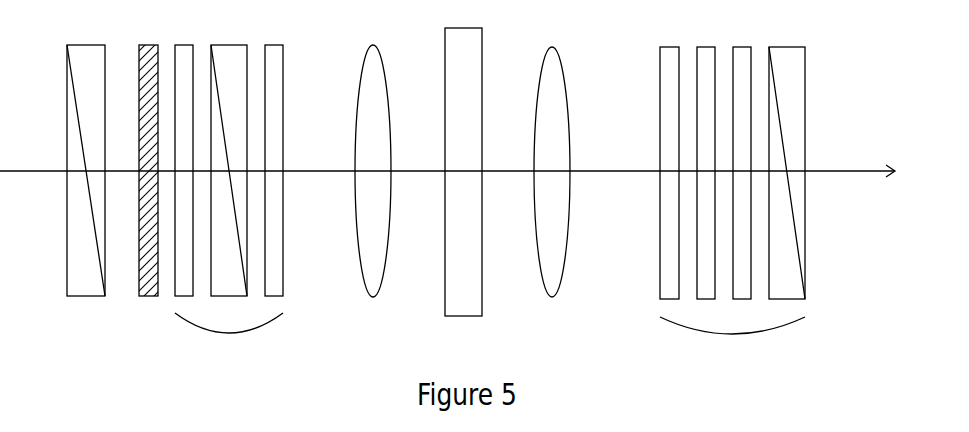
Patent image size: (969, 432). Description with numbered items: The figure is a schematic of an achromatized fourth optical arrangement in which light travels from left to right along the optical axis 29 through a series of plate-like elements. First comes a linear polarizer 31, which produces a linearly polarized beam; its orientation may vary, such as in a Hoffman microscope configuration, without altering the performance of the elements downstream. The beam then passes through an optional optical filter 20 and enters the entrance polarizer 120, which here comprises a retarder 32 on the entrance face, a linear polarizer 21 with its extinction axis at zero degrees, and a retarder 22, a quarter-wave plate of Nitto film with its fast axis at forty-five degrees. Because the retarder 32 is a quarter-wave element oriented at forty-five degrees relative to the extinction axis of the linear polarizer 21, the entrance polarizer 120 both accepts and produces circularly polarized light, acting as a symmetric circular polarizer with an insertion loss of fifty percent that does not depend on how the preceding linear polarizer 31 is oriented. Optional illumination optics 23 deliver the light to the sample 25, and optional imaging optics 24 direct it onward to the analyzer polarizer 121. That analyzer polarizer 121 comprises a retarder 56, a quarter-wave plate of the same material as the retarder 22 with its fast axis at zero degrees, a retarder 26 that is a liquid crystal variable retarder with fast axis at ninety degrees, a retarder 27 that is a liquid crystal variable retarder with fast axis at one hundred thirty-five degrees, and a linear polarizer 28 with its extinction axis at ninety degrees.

The optical axis 29 is at (447, 157).
The linear polarizer 31 is at (86, 151).
The optical filter 20 is at (150, 168).
The retarder 32 is at (185, 151).
The linear polarizer 21 is at (229, 151).
The retarder 22 is at (273, 151).
The entrance polarizer 120 is at (229, 337).
The illumination optics 23 is at (373, 152).
The sample 25 is at (463, 158).
The imaging optics 24 is at (552, 152).
The retarder 56 is at (670, 153).
The retarder 26 is at (707, 153).
The retarder 27 is at (745, 153).
The linear polarizer 28 is at (787, 153).
The analyzer polarizer 121 is at (732, 342).